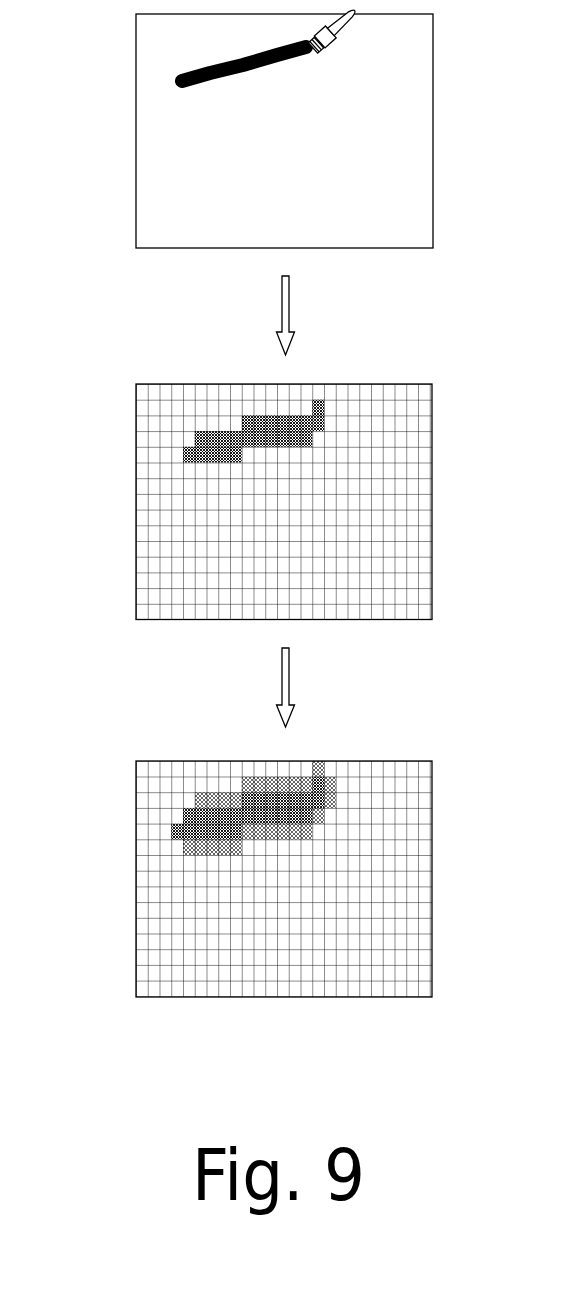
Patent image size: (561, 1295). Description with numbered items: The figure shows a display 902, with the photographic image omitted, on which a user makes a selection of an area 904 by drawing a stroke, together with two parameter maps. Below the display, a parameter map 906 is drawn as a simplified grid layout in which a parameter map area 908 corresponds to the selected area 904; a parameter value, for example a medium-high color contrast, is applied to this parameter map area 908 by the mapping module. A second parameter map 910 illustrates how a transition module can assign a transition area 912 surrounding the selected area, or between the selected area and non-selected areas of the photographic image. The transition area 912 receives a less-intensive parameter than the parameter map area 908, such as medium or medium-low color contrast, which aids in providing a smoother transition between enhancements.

The display 902 is at (419, 238).
The area 904 is at (227, 59).
The parameter map 906 is at (421, 608).
The parameter map area 908 is at (198, 433).
The parameter map 910 is at (421, 986).
The transition area 912 is at (198, 795).